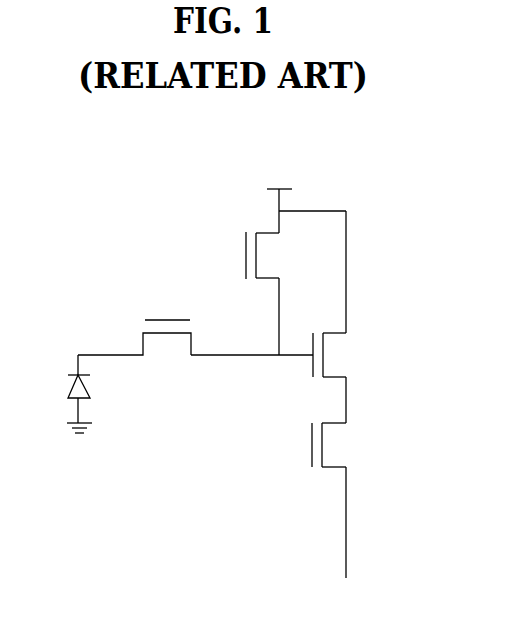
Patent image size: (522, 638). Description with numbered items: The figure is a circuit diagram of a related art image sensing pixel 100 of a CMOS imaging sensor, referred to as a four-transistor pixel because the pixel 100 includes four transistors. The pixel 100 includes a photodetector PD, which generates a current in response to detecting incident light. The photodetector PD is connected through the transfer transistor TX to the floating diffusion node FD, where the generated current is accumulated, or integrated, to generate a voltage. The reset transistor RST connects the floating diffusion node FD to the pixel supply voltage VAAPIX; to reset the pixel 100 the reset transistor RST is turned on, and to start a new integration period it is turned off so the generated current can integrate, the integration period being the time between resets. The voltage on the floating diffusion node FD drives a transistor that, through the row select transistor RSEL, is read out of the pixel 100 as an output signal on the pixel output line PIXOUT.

The image sensing pixel 100 is at (459, 160).
The pixel supply voltage VAAPIX is at (295, 245).
The reset transistor RST is at (246, 255).
The transfer transistor TX is at (168, 320).
The floating diffusion node FD is at (252, 332).
The row select transistor RSEL is at (312, 444).
The pixel output line PIXOUT is at (345, 539).
The photodetector PD is at (97, 394).